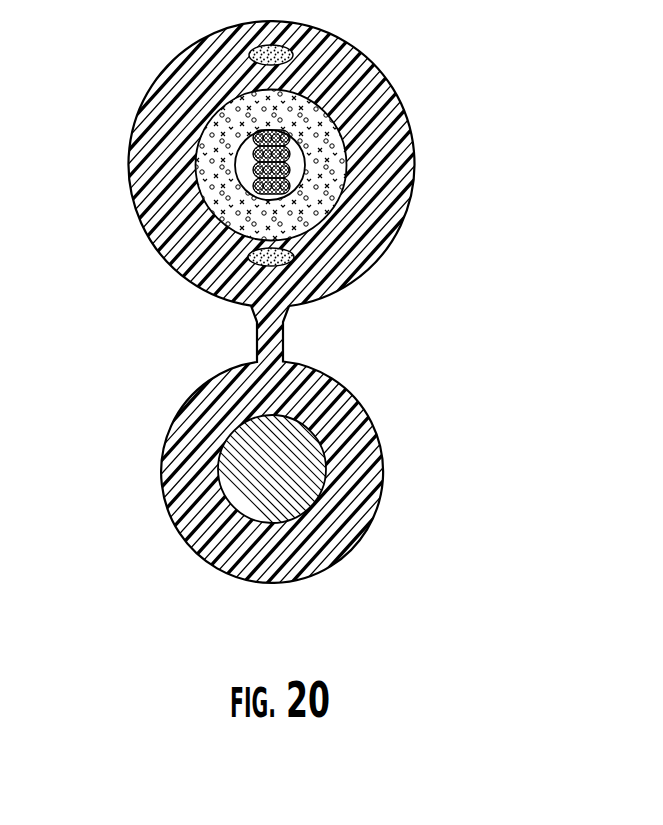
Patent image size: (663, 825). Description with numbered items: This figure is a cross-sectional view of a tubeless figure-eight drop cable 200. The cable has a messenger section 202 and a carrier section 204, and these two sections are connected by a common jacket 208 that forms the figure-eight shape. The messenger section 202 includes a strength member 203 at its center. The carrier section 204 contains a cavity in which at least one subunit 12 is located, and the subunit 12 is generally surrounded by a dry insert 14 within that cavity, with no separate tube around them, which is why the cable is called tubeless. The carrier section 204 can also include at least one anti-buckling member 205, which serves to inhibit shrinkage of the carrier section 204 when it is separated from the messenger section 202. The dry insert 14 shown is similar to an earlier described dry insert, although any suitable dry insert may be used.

The subunit 12 is at (229, 189).
The dry insert 14 is at (316, 138).
The tubeless figure-eight drop cable 200 is at (403, 557).
The messenger section 202 is at (163, 505).
The strength member 203 is at (280, 490).
The carrier section 204 is at (360, 279).
The anti-buckling member 205 is at (293, 53).
The common jacket 208 is at (300, 422).